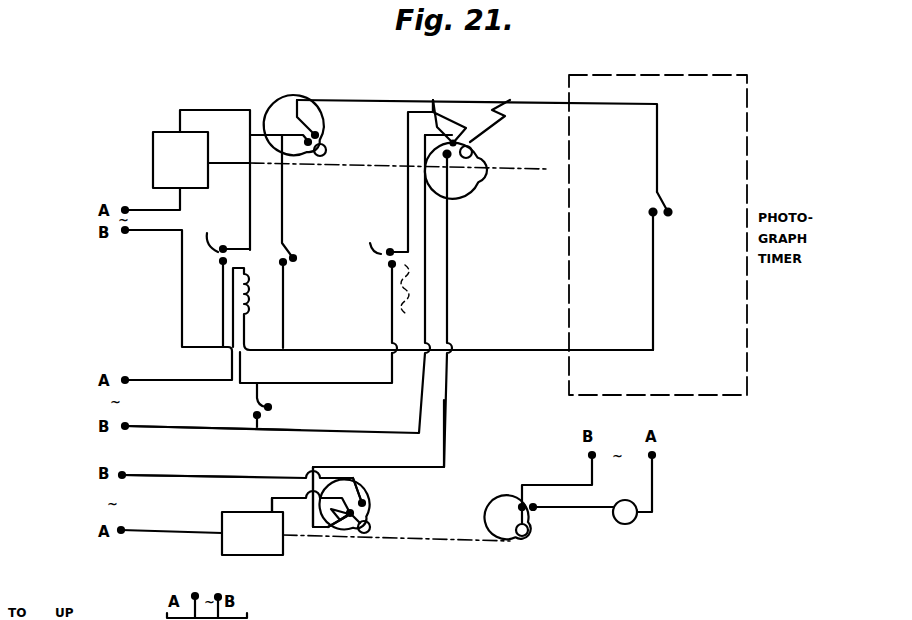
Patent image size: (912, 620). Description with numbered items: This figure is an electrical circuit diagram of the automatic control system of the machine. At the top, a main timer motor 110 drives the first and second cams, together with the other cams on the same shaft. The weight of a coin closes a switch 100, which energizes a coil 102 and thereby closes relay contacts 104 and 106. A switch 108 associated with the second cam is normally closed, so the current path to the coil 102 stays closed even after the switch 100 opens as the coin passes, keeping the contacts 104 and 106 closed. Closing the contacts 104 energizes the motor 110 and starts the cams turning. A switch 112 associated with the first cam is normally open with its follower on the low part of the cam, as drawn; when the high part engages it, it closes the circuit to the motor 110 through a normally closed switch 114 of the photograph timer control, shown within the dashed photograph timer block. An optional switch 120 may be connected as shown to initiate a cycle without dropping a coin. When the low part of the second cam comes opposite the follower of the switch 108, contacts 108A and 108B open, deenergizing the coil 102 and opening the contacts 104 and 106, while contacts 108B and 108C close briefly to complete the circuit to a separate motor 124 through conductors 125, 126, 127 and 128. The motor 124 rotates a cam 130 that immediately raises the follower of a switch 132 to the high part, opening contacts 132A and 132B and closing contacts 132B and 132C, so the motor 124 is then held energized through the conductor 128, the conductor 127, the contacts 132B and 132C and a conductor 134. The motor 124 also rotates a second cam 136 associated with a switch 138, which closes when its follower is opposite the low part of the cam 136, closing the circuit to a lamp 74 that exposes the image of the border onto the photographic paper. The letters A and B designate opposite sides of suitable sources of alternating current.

The motor 110 is at (155, 150).
The switch 112 is at (303, 128).
The relay contacts 104 is at (223, 279).
The switch 120 is at (297, 267).
The coil 102 is at (257, 300).
The relay contacts 106 is at (395, 183).
The switch 108 is at (473, 146).
The contact 108A is at (510, 100).
The contact 108B is at (433, 106).
The contact 108C is at (450, 158).
The switch 114 is at (665, 199).
The switch 100 is at (272, 407).
The conductor 125 is at (343, 435).
The conductor 126 is at (446, 452).
The conductor 127 is at (272, 495).
The conductor 134 is at (182, 480).
The conductor 128 is at (208, 534).
The motor 124 is at (230, 557).
The switch 132 is at (333, 522).
The contact 132A is at (343, 533).
The contact 132B is at (358, 513).
The contact 132C is at (368, 502).
The cam 130 is at (380, 547).
The cam 136 is at (538, 547).
The switch 138 is at (517, 497).
The lamp 74 is at (641, 520).